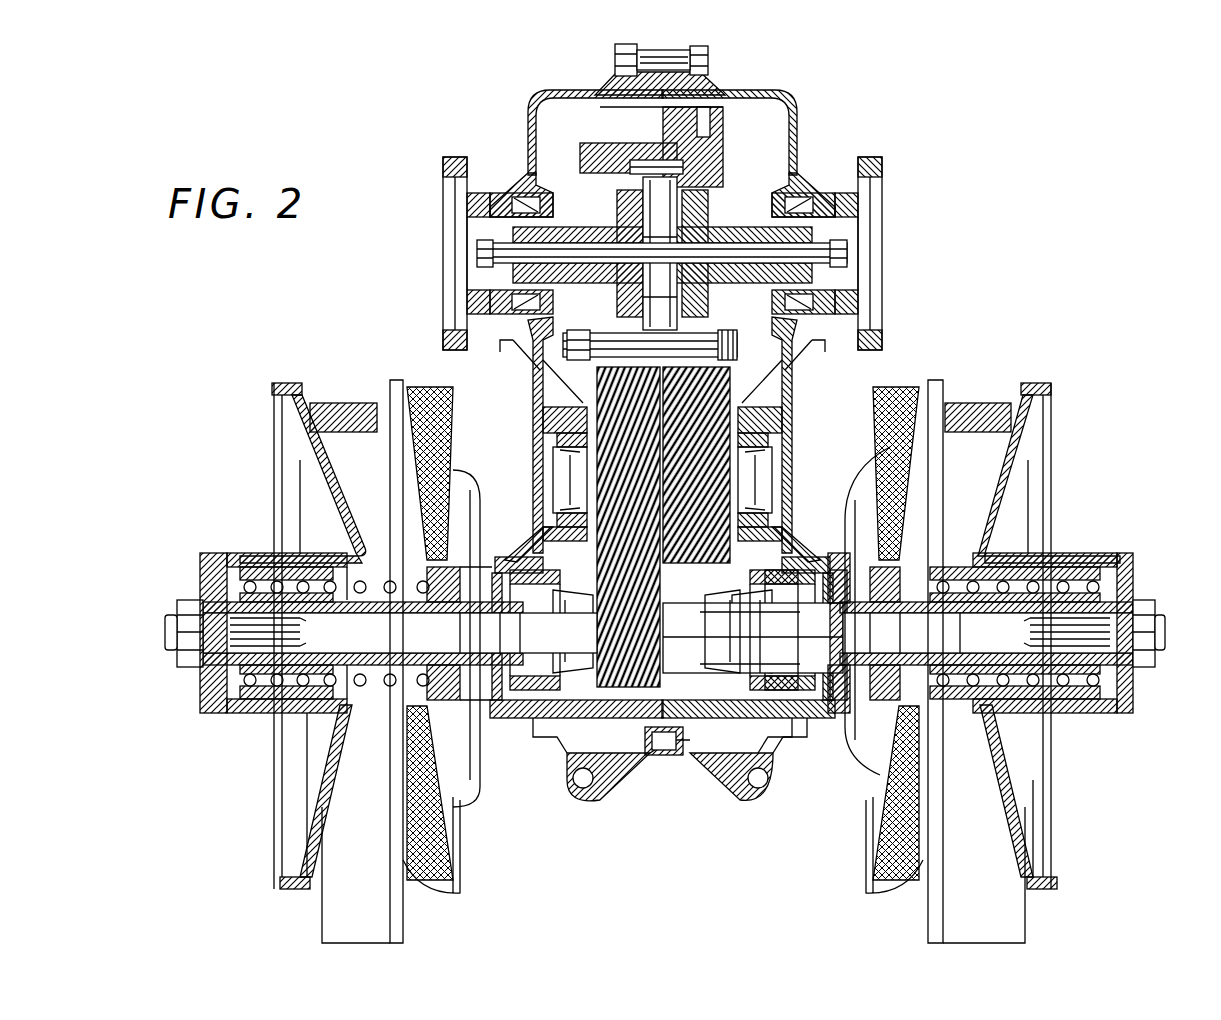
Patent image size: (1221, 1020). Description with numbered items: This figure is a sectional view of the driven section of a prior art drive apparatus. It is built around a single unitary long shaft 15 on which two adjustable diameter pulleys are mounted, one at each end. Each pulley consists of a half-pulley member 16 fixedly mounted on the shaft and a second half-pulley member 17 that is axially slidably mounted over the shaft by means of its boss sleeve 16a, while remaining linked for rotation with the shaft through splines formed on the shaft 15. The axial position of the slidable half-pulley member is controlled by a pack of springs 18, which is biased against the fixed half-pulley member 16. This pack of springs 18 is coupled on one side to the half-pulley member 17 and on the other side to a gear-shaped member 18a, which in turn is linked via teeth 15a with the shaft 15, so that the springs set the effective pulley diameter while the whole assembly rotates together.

The long shaft 15 is at (768, 660).
The teeth 15a is at (843, 573).
The half-pulley member 16 is at (1043, 882).
The boss sleeve 16a is at (1128, 592).
The half-pulley member 17 is at (955, 850).
The pack of springs 18 is at (893, 762).
The gear-shaped member 18a is at (865, 495).